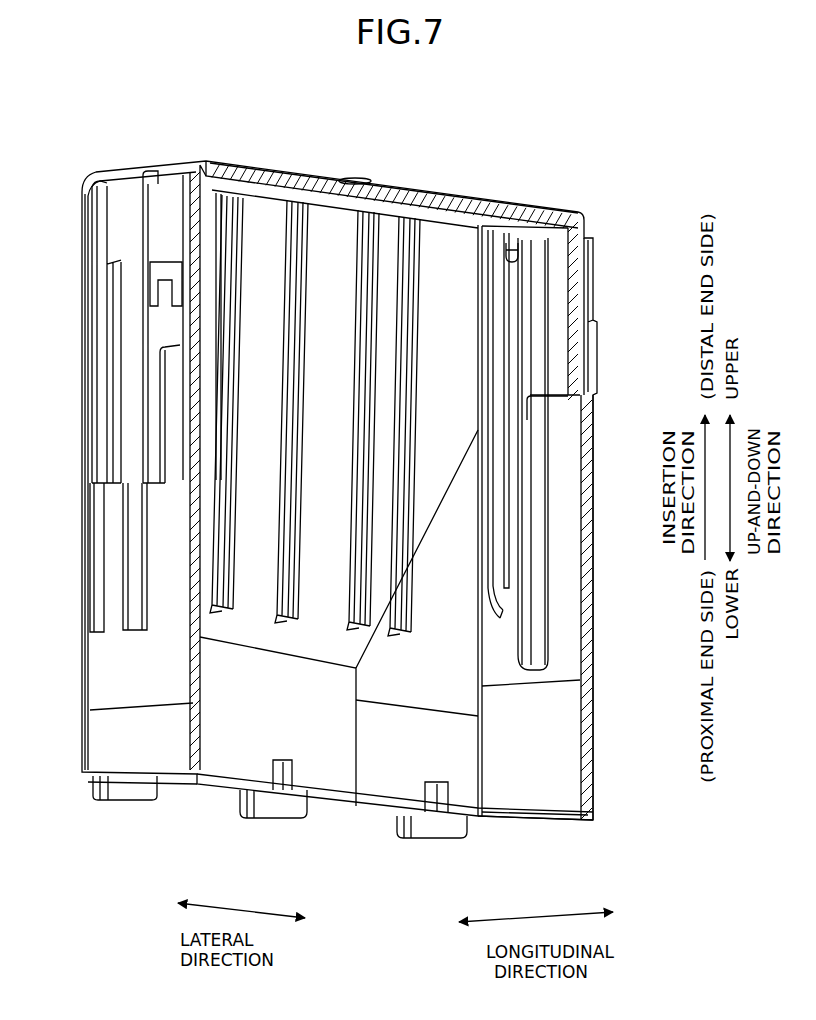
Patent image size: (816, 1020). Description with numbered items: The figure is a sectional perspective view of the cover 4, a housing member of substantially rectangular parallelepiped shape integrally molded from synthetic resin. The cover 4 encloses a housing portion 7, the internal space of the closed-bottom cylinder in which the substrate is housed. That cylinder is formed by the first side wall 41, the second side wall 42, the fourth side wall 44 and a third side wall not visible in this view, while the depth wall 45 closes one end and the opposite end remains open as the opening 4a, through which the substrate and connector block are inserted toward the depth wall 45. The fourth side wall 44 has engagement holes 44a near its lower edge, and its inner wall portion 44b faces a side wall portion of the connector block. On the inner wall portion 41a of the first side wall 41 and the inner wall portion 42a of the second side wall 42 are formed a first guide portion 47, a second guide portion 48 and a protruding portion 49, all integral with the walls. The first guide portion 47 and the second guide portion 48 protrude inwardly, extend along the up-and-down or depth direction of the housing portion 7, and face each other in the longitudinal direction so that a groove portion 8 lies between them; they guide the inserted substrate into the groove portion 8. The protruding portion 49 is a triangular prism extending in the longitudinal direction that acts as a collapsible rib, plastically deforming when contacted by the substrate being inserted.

The cover 4 is at (178, 124).
The opening 4a is at (388, 822).
The housing portion 7 is at (542, 284).
The groove portion 8 is at (512, 498).
The first side wall 41 is at (132, 784).
The inner wall portion 41a is at (200, 571).
The second side wall 42 is at (536, 836).
The inner wall portion 42a is at (562, 650).
The fourth side wall 44 is at (214, 800).
The engagement holes 44a is at (437, 782).
The inner wall portion 44b is at (324, 745).
The depth wall 45 is at (390, 170).
The first guide portion 47 is at (526, 476).
The second guide portion 48 is at (497, 447).
The protruding portion 49 is at (512, 238).